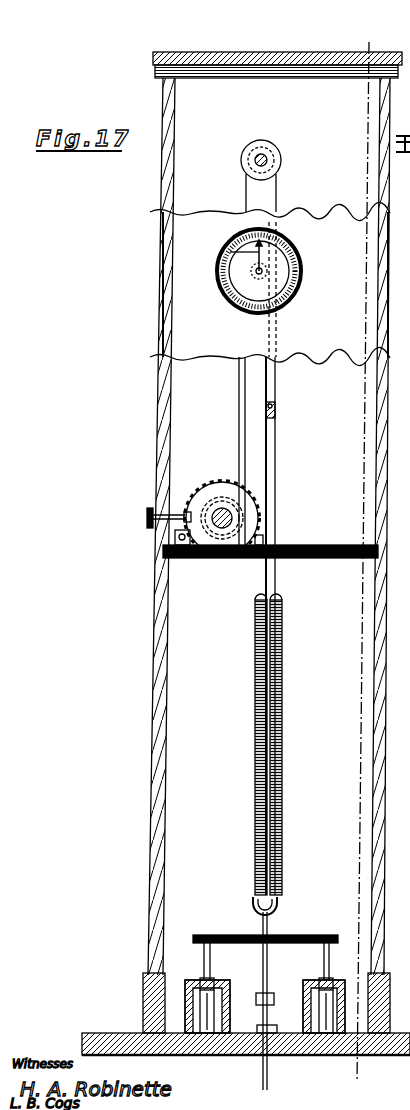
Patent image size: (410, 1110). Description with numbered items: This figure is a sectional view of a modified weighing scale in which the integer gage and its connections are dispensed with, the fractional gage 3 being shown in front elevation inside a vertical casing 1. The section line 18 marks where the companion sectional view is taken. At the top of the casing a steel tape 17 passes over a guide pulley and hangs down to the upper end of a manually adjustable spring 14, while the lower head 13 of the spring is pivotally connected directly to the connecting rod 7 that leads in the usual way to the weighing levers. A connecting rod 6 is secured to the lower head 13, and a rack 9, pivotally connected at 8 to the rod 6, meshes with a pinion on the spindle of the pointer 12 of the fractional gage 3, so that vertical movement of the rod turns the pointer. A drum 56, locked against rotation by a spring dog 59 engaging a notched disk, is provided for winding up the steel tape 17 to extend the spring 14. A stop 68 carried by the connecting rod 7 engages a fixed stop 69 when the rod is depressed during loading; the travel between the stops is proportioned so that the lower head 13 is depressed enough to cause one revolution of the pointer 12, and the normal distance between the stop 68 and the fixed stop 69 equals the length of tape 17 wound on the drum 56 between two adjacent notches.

The casing 1 is at (386, 404).
The fractional gage 3 is at (240, 280).
The connecting rod 6 is at (270, 443).
The connecting rod 7 is at (268, 960).
The pivotal connection 8 is at (276, 407).
The rack 9 is at (280, 388).
The pointer 12 is at (230, 246).
The lower head 13 is at (280, 893).
The spring 14 is at (283, 735).
The steel tape 17 is at (247, 185).
The section line 18 is at (358, 561).
The drum 56 is at (218, 482).
The spring dog 59 is at (185, 512).
The stop 68 is at (258, 993).
The fixed stop 69 is at (258, 1025).